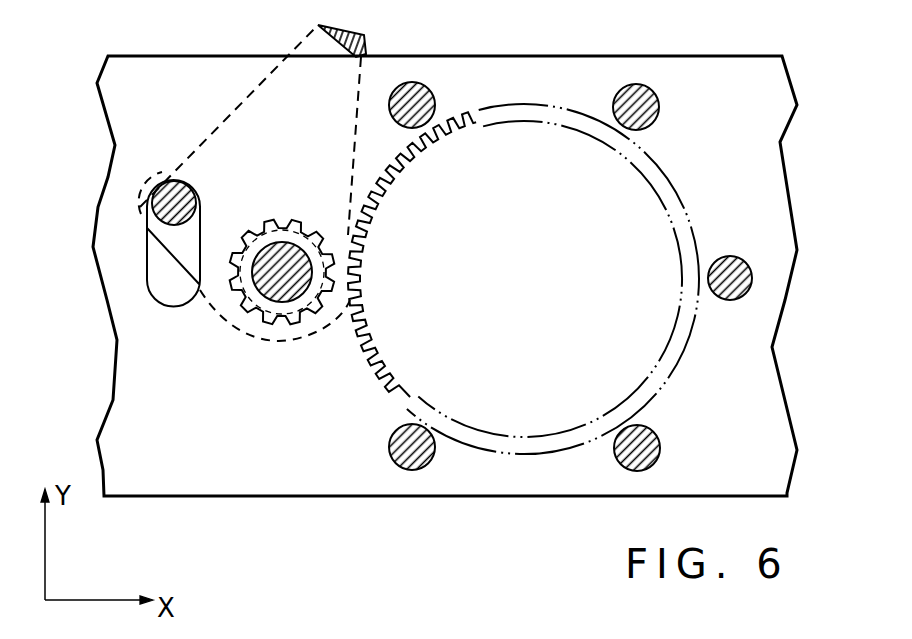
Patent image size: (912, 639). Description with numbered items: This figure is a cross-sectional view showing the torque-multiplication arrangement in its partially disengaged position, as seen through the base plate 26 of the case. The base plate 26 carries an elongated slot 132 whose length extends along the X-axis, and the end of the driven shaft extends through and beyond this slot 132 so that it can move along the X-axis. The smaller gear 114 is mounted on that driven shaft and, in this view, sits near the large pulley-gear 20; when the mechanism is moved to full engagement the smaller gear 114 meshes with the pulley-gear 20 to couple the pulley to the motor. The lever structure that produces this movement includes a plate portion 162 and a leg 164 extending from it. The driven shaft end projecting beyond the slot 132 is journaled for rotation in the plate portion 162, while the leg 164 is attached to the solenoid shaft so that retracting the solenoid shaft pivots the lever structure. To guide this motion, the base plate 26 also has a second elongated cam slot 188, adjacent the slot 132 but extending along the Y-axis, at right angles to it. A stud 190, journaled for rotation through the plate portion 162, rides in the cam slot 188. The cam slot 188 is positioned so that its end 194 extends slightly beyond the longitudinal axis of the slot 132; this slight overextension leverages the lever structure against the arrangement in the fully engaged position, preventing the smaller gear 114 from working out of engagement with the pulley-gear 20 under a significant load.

The pulley-gear 20 is at (513, 125).
The base plate 26 is at (703, 56).
The smaller gear 114 is at (252, 310).
The elongated slot 132 is at (329, 245).
The plate portion 162 is at (232, 107).
The leg 164 is at (343, 30).
The cam slot 188 is at (147, 258).
The stud 190 is at (148, 203).
The end of cam slot 194 is at (173, 307).